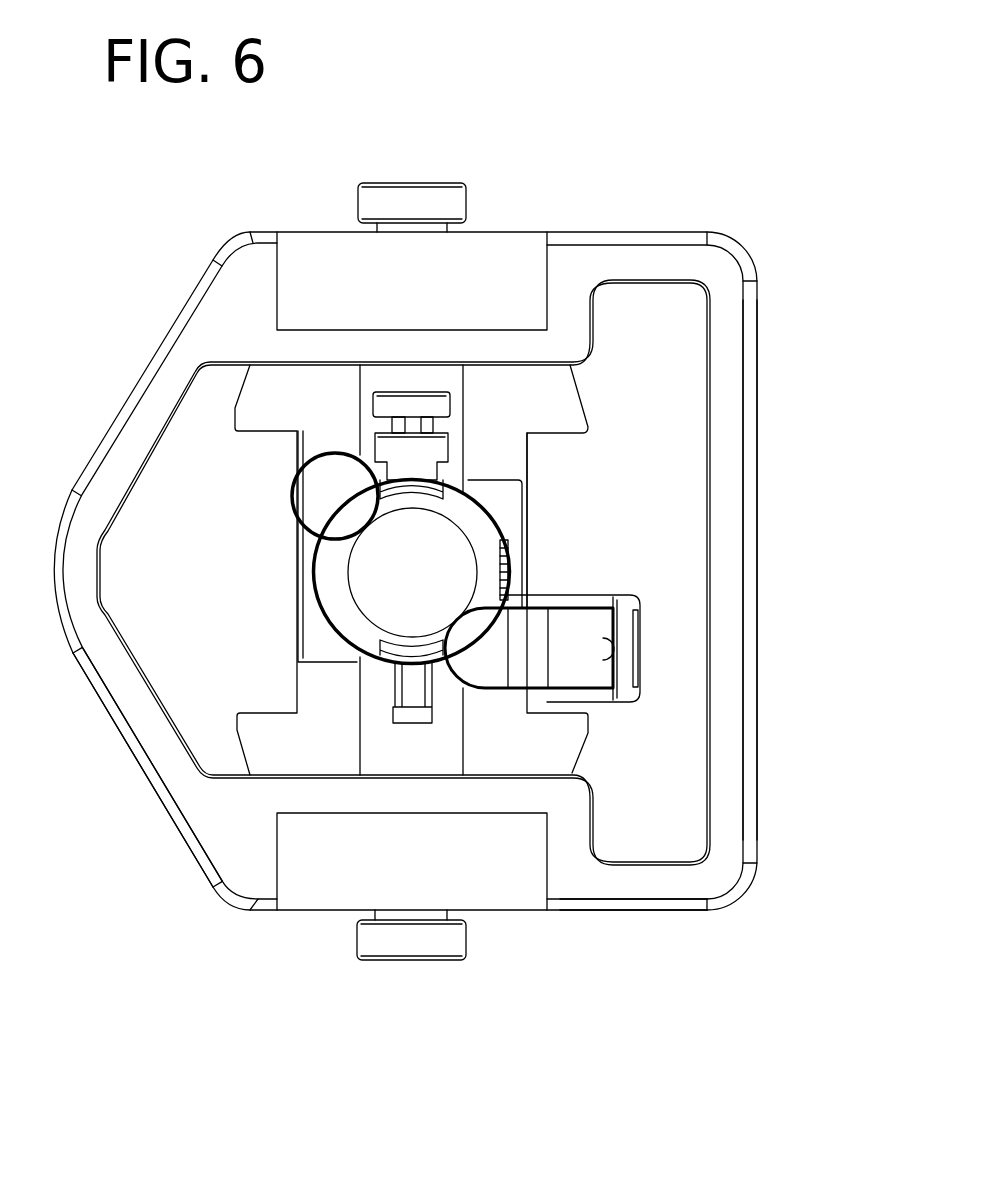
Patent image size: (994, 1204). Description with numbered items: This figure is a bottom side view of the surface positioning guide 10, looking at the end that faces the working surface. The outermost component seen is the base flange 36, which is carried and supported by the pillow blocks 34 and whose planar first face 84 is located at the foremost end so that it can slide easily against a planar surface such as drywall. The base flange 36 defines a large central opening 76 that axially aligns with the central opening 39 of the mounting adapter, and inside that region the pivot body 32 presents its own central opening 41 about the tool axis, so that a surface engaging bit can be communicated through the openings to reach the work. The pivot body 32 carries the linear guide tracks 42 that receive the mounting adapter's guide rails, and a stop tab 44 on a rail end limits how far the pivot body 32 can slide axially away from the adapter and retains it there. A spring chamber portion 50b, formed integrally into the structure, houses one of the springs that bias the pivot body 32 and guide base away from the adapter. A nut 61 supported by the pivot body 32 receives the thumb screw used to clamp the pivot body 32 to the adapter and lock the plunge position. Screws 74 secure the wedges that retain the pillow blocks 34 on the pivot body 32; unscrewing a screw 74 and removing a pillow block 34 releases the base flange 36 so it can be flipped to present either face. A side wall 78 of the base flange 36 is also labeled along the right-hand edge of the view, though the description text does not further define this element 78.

The surface positioning guide 10 is at (775, 226).
The pivot body 32 is at (573, 411).
The pillow blocks 34 is at (507, 240).
The base flange 36 is at (673, 880).
The central opening 39 is at (367, 587).
The central opening 41 is at (398, 598).
The linear guide tracks 42 is at (383, 442).
The stop tab 44 is at (450, 447).
The spring chamber portion 50b is at (342, 507).
The nut 61 is at (405, 403).
The screws 74 is at (415, 195).
The central opening 76 is at (190, 667).
The housing side wall 78 is at (753, 635).
The first face 84 is at (240, 873).